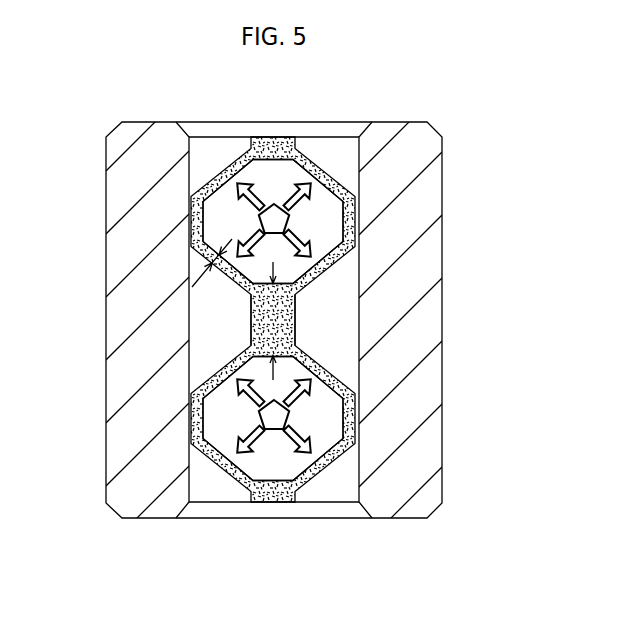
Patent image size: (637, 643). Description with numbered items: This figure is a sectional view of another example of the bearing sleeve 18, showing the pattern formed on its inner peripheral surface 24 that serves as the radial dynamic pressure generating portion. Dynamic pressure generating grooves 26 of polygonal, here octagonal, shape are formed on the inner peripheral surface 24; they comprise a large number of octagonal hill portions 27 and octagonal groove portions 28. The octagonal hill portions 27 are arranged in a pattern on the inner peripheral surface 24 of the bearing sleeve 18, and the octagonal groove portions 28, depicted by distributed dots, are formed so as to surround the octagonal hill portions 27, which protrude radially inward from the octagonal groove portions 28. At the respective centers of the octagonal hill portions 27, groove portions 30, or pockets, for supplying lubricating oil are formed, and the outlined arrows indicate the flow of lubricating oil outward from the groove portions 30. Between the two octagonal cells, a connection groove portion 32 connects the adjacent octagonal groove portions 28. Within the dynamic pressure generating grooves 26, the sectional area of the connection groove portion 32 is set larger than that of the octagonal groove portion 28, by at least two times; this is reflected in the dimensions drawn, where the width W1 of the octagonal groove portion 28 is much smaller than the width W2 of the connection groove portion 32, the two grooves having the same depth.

The bearing sleeve 18 is at (468, 208).
The inner peripheral surface 24 is at (358, 328).
The dynamic pressure generating grooves 26 is at (273, 370).
The octagonal hill portion 27 is at (295, 458).
The octagonal groove portion 28 is at (229, 478).
The groove portion (pocket) 30 is at (262, 225).
The connection groove portion 32 is at (268, 315).
The width of octagonal groove portion W1 is at (212, 270).
The width of connection groove portion W2 is at (276, 310).